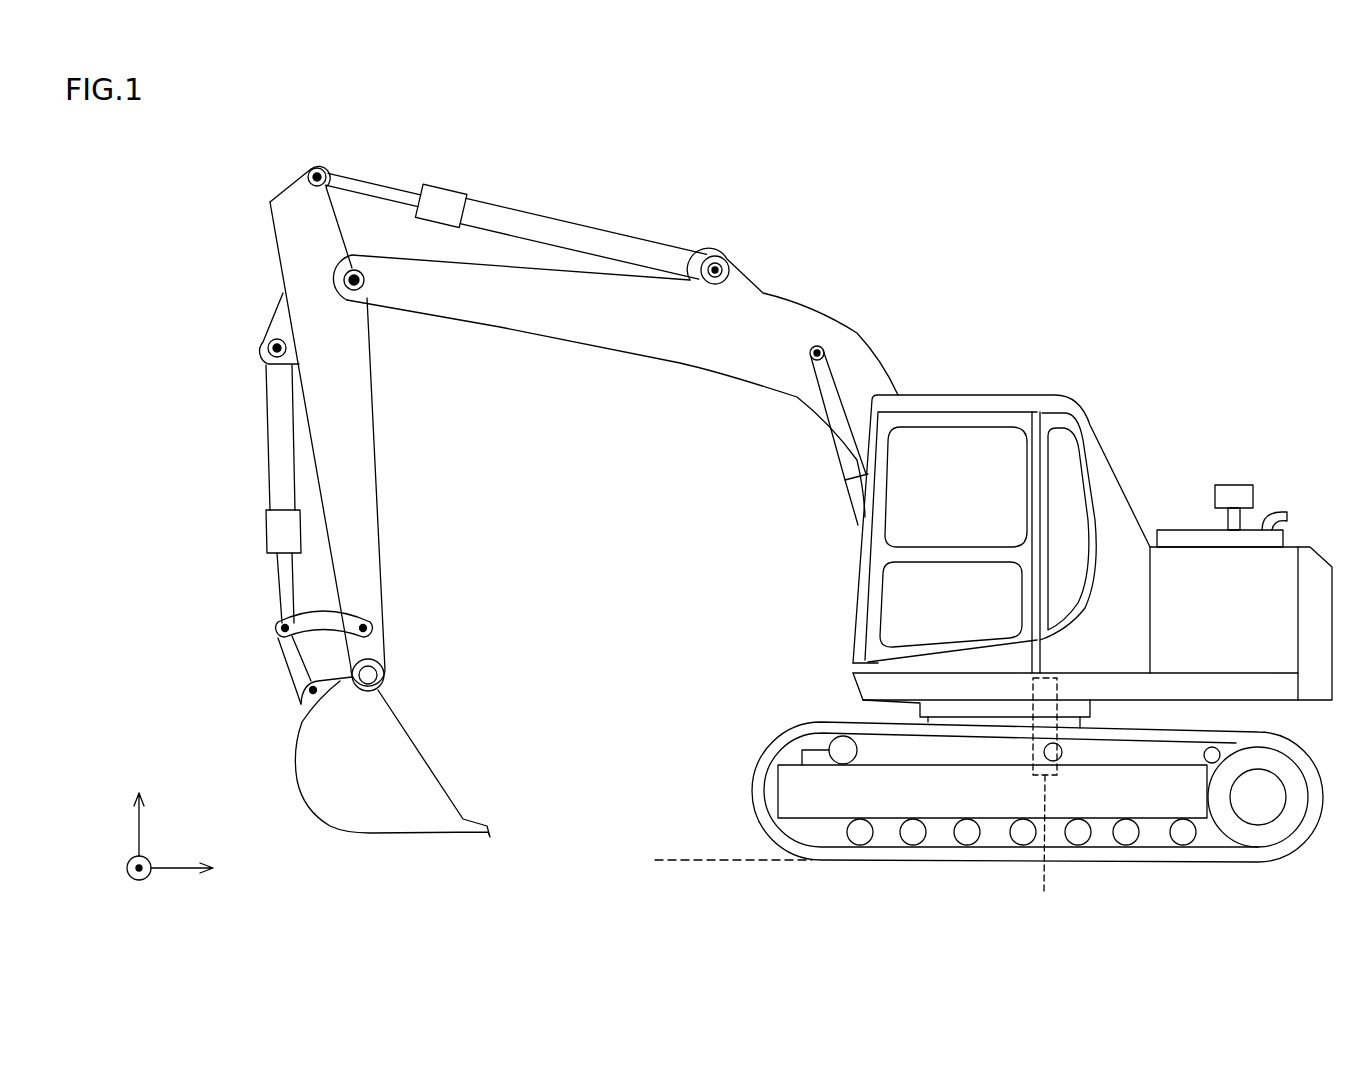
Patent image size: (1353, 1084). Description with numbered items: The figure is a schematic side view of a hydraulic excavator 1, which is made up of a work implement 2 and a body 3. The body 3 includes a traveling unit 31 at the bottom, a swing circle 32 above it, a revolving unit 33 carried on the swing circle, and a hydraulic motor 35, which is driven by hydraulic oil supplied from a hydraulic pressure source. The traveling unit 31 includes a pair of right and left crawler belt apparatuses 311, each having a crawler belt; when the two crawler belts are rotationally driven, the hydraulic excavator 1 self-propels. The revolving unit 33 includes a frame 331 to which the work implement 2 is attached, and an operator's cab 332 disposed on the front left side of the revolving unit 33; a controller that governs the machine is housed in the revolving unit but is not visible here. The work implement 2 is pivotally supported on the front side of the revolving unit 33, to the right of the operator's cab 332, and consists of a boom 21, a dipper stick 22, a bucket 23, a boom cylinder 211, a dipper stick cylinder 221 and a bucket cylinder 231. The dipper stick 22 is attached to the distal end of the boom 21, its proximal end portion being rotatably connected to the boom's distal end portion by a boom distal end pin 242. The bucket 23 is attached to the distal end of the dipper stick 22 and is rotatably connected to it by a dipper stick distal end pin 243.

The hydraulic excavator 1 is at (1305, 203).
The work implement 2 is at (668, 221).
The boom 21 is at (856, 333).
The boom cylinder 211 is at (858, 507).
The dipper stick 22 is at (272, 258).
The dipper stick cylinder 221 is at (595, 242).
The bucket 23 is at (399, 835).
The bucket cylinder 231 is at (265, 437).
The boom distal end pin 242 is at (343, 282).
The dipper stick distal end pin 243 is at (362, 674).
The body 3 is at (1085, 350).
The traveling unit 31 is at (933, 862).
The crawler belt apparatus 311 is at (1150, 865).
The swing circle 32 is at (928, 708).
The revolving unit 33 is at (1162, 495).
The frame 331 is at (1230, 690).
The operator's cab 332 is at (982, 453).
The hydraulic motor 35 is at (1042, 798).